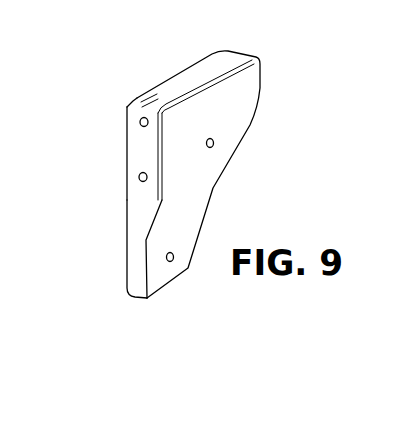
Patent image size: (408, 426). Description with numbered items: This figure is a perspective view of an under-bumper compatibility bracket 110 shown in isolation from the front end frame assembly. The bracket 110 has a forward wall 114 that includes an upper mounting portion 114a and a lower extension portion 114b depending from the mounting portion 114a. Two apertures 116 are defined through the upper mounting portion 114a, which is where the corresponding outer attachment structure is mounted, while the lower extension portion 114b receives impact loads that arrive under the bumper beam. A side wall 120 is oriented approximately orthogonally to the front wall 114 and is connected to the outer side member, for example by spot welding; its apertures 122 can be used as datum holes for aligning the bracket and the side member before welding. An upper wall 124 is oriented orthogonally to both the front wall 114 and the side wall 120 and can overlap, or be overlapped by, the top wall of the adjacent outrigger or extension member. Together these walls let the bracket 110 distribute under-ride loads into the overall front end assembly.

The under-bumper compatibility bracket 110 is at (100, 205).
The forward wall 114 is at (104, 221).
The upper mounting portion 114a is at (140, 152).
The lower extension portion 114b is at (138, 285).
The apertures 116 is at (140, 121).
The side wall 120 is at (195, 193).
The apertures 122 is at (214, 145).
The upper wall 124 is at (187, 80).